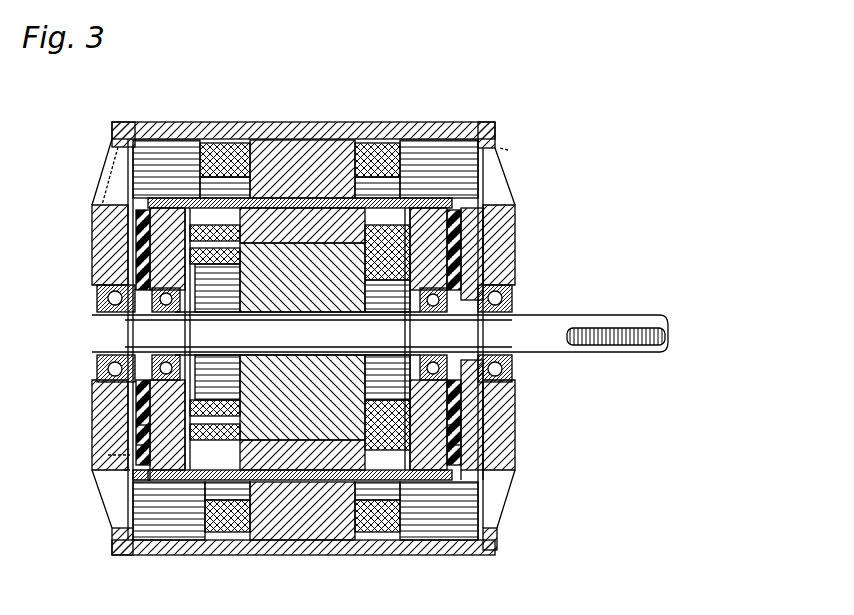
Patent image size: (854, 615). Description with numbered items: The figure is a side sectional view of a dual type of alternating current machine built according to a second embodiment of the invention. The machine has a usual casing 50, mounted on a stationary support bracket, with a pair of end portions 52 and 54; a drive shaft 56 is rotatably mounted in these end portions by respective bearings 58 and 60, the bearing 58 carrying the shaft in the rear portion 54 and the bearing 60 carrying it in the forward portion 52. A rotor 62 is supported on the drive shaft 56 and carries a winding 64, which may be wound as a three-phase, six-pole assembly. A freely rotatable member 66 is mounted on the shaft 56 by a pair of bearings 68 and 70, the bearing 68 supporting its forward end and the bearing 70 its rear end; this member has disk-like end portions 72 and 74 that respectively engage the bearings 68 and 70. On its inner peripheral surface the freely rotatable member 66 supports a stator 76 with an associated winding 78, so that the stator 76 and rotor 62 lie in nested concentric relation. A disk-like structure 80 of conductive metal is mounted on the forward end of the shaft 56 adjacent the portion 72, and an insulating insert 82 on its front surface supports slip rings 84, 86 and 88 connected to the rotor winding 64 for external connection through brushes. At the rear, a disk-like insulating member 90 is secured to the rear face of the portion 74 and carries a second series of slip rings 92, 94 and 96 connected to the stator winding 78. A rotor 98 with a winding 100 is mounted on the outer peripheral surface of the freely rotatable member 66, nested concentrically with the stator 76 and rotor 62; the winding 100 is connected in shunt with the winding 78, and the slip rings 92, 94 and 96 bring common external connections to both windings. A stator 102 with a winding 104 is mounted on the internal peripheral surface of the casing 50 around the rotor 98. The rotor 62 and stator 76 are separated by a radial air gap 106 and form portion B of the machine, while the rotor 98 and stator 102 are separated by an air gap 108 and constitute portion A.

The casing 50 is at (148, 556).
The forward end portion 52 is at (500, 405).
The rear end portion 54 is at (108, 400).
The drive shaft 56 is at (115, 330).
The bearing 58 is at (108, 300).
The bearing 60 is at (498, 288).
The rotor 62 is at (267, 367).
The rotor winding 64 is at (387, 267).
The freely rotatable member 66 is at (420, 197).
The bearing 68 is at (465, 277).
The bearing 70 is at (143, 283).
The disk-like end portion 72 is at (473, 220).
The disk-like end portion 74 is at (165, 245).
The stator 76 is at (293, 220).
The stator winding 78 is at (410, 226).
The disk-like structure 80 is at (483, 377).
The insulating insert 82 is at (468, 470).
The slip ring 84 is at (482, 398).
The slip ring 86 is at (483, 425).
The slip ring 88 is at (478, 440).
The insulating member 90 is at (135, 480).
The slip ring 92 is at (140, 418).
The slip ring 94 is at (135, 436).
The slip ring 96 is at (140, 452).
The rotor 98 is at (230, 482).
The rotor winding 100 is at (427, 500).
The stator 102 is at (245, 537).
The stator winding 104 is at (410, 510).
The radial air gap 106 is at (317, 425).
The air gap 108 is at (343, 528).